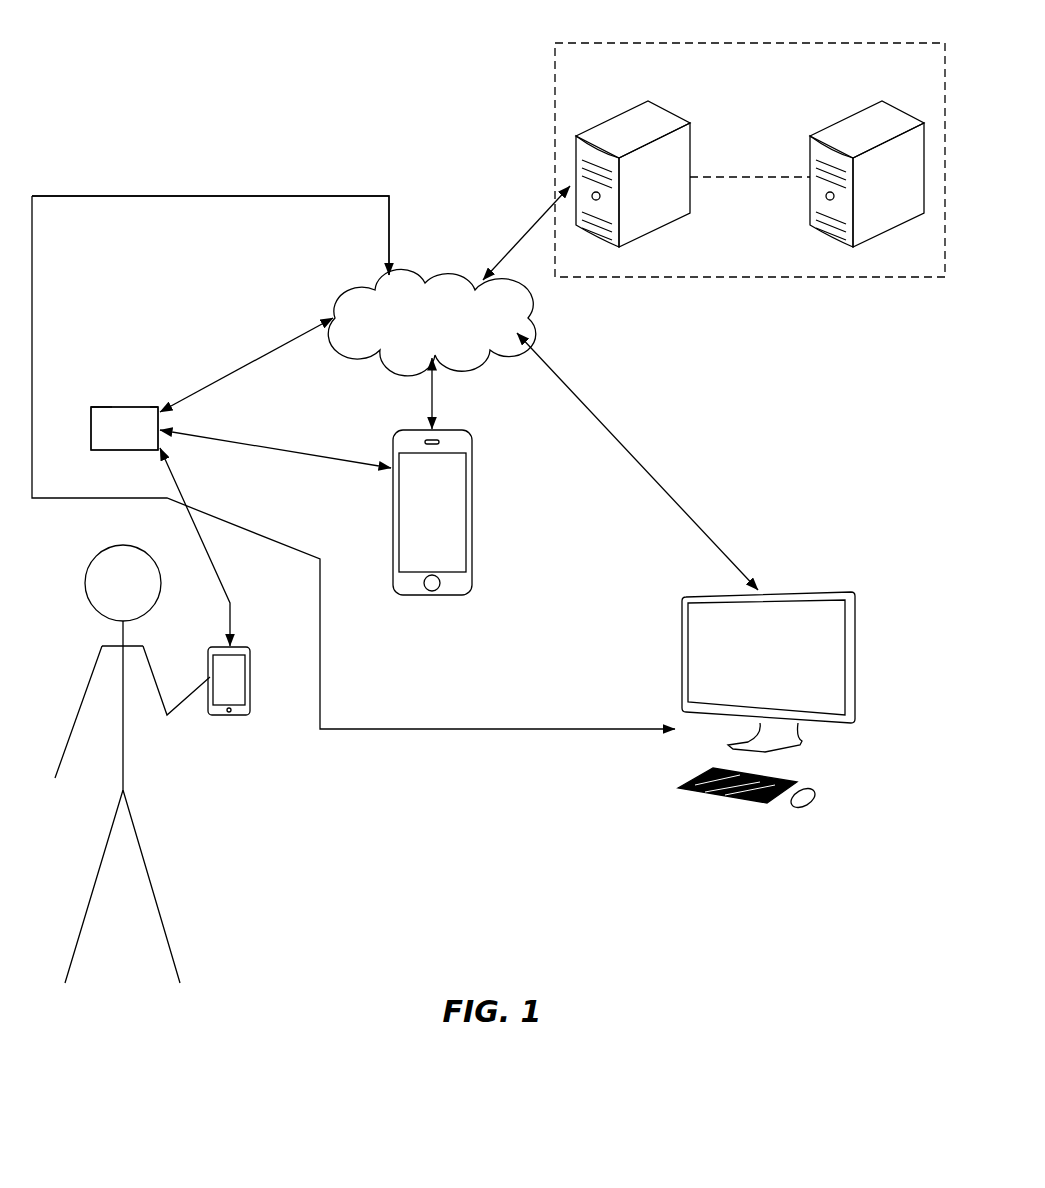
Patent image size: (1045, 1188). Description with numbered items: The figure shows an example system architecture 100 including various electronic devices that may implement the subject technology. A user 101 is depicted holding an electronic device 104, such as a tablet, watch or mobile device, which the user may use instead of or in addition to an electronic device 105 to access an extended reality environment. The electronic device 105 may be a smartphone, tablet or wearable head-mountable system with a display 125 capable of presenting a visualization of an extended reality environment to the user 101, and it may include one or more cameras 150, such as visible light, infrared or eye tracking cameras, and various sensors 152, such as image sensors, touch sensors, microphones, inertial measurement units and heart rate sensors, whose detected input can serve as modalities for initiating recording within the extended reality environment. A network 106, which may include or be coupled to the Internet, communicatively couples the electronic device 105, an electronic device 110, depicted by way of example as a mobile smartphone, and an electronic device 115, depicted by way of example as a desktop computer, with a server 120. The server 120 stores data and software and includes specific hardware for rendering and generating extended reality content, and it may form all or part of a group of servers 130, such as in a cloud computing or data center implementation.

The system architecture 100 is at (122, 10).
The user 101 is at (97, 655).
The electronic device 104 is at (240, 646).
The electronic device 105 is at (130, 406).
The network 106 is at (431, 279).
The electronic device 110 is at (430, 597).
The electronic device 115 is at (760, 812).
The server 120 is at (612, 118).
The display 125 is at (100, 437).
The group of servers 130 is at (553, 78).
The cameras 150 is at (104, 406).
The sensors 152 is at (96, 406).